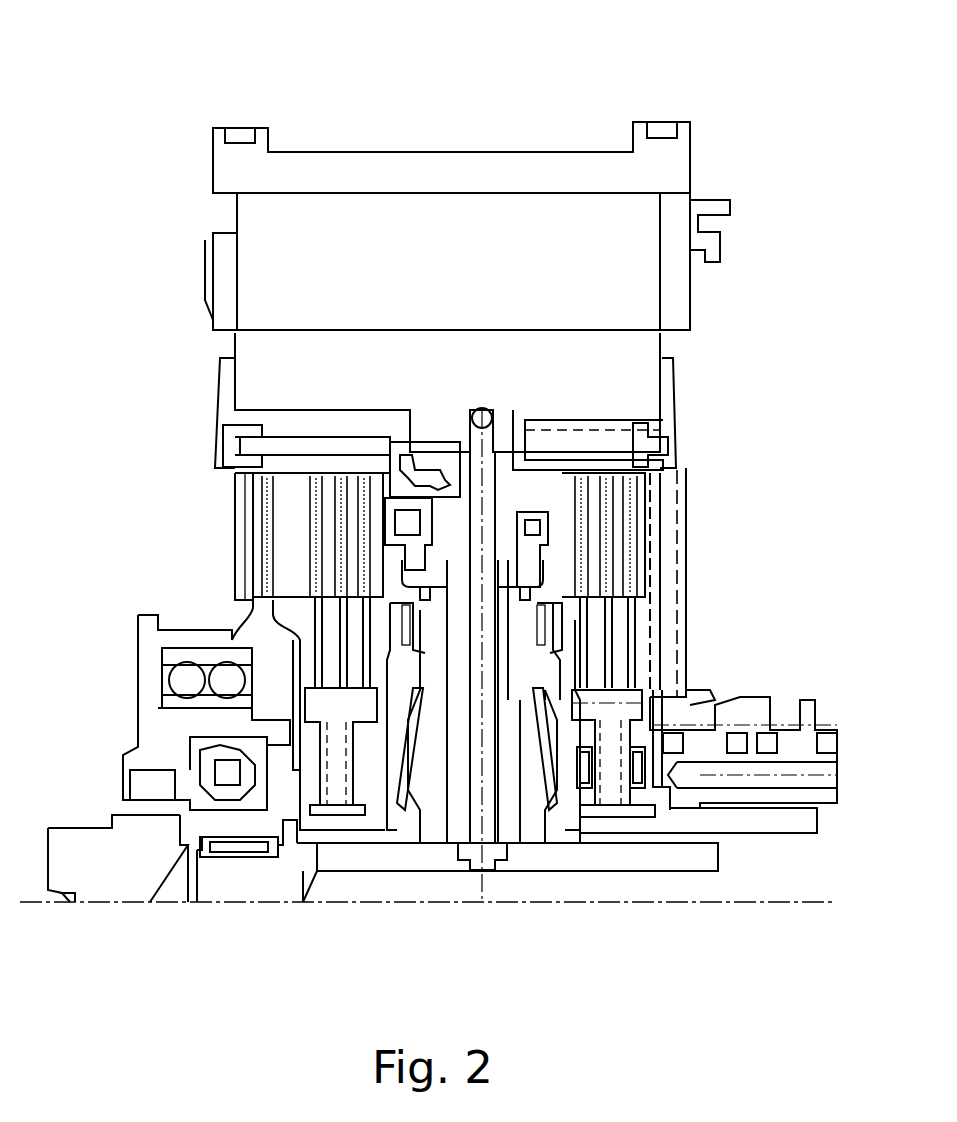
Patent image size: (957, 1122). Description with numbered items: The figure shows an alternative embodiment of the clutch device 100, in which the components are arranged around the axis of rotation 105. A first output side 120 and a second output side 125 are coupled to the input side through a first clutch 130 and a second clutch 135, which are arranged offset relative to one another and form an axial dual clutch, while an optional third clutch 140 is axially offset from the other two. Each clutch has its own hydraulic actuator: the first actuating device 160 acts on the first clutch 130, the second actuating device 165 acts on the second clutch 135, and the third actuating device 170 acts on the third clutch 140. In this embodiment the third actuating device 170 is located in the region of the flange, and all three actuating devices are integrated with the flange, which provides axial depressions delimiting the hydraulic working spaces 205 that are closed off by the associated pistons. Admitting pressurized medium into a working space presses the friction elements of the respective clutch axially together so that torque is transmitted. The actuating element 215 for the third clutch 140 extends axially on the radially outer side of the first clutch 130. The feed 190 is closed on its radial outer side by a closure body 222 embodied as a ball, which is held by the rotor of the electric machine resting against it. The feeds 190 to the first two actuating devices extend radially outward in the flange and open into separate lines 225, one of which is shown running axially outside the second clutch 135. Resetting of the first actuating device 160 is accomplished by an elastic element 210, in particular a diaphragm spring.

The clutch device 100 is at (180, 85).
The axis of rotation 105 is at (832, 905).
The first output side 120 is at (705, 855).
The second output side 125 is at (805, 820).
The first clutch 130 is at (340, 910).
The second clutch 135 is at (597, 910).
The third clutch 140 is at (250, 908).
The first actuating device 160 is at (385, 525).
The second actuating device 165 is at (455, 457).
The third actuating device 170 is at (428, 440).
The feed 190 is at (535, 548).
The hydraulic working space 205 is at (436, 520).
The elastic element 210 is at (440, 800).
The actuating element 215 is at (330, 462).
The closure body 222 is at (493, 410).
The lines 225 is at (668, 482).